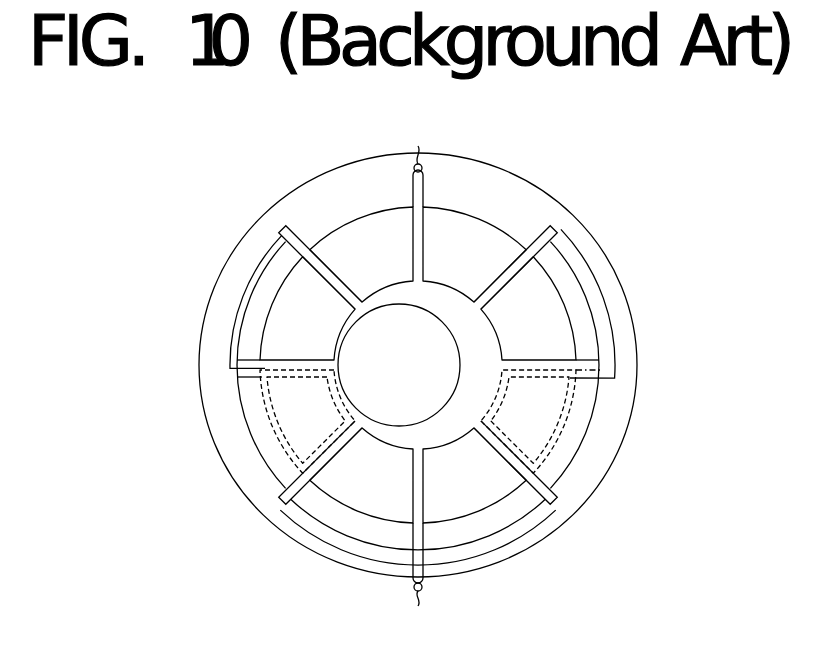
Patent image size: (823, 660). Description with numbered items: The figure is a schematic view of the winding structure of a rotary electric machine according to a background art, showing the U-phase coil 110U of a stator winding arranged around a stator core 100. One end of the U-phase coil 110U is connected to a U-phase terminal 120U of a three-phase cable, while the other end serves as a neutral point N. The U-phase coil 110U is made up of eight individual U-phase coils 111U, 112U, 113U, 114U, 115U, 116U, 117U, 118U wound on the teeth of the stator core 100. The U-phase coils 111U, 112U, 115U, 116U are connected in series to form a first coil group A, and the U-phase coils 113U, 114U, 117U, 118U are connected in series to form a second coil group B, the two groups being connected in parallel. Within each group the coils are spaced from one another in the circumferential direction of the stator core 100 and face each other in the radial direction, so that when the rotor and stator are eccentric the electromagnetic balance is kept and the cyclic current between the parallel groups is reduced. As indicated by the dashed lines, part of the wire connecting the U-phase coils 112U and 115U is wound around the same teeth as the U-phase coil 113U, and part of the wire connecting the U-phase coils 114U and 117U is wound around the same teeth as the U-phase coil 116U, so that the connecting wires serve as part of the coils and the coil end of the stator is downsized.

The stator core 100 is at (562, 205).
The U-phase coil 110U is at (288, 141).
The U-phase coil 111U is at (356, 222).
The U-phase coil 112U is at (270, 285).
The U-phase coil 113U is at (245, 413).
The U-phase coil 114U is at (336, 506).
The U-phase coil 115U is at (487, 506).
The U-phase coil 116U is at (562, 438).
The U-phase coil 117U is at (594, 321).
The U-phase coil 118U is at (466, 220).
The U-phase terminal 120U is at (416, 162).